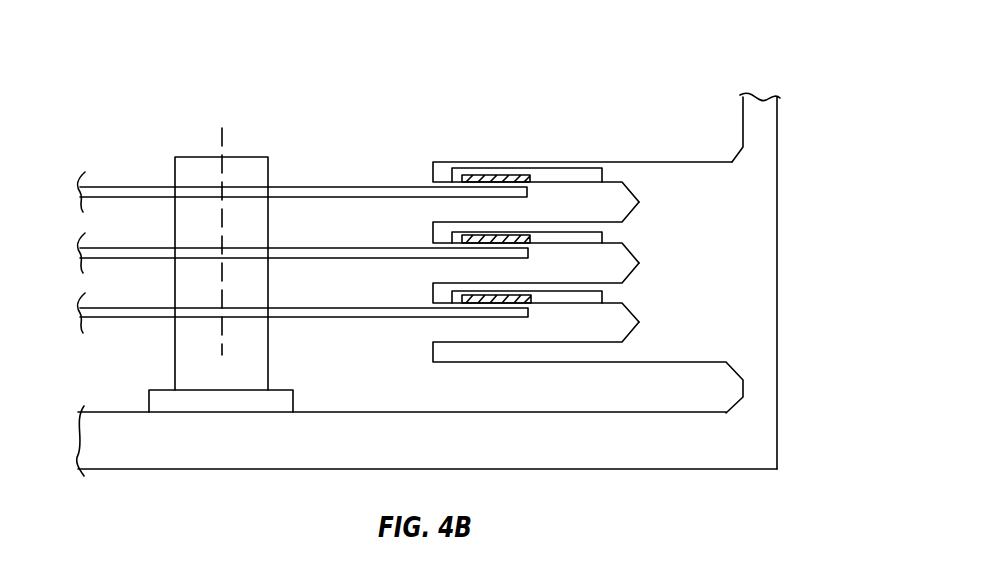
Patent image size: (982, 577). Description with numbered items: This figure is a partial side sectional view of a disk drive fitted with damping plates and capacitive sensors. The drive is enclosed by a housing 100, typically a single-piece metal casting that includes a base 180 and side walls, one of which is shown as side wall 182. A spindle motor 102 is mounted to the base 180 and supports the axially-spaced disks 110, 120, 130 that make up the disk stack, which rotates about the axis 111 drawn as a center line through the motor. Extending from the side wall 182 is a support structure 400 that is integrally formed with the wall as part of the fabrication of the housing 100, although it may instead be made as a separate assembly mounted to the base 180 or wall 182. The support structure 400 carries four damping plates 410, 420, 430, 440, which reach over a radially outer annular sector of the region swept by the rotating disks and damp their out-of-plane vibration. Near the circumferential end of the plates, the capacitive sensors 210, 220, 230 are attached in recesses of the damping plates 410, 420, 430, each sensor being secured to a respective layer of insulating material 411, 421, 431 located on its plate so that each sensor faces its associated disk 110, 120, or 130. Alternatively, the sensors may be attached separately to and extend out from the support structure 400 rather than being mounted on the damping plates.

The disk drive housing 100 is at (470, 301).
The spindle motor 102 is at (162, 389).
The disk 110 is at (306, 187).
The axis 111 is at (222, 143).
The disk 120 is at (306, 248).
The disk 130 is at (306, 308).
The base 180 is at (264, 469).
The side wall 182 is at (765, 164).
The capacitive sensor 210 is at (492, 175).
The capacitive sensor 220 is at (465, 235).
The capacitive sensor 230 is at (468, 300).
The support structure 400 is at (560, 236).
The damping plate 410 is at (576, 164).
The layer of insulating material 411 is at (603, 177).
The damping plate 420 is at (545, 226).
The layer of insulating material 421 is at (620, 231).
The damping plate 430 is at (541, 299).
The layer of insulating material 431 is at (597, 300).
The damping plate 440 is at (547, 345).